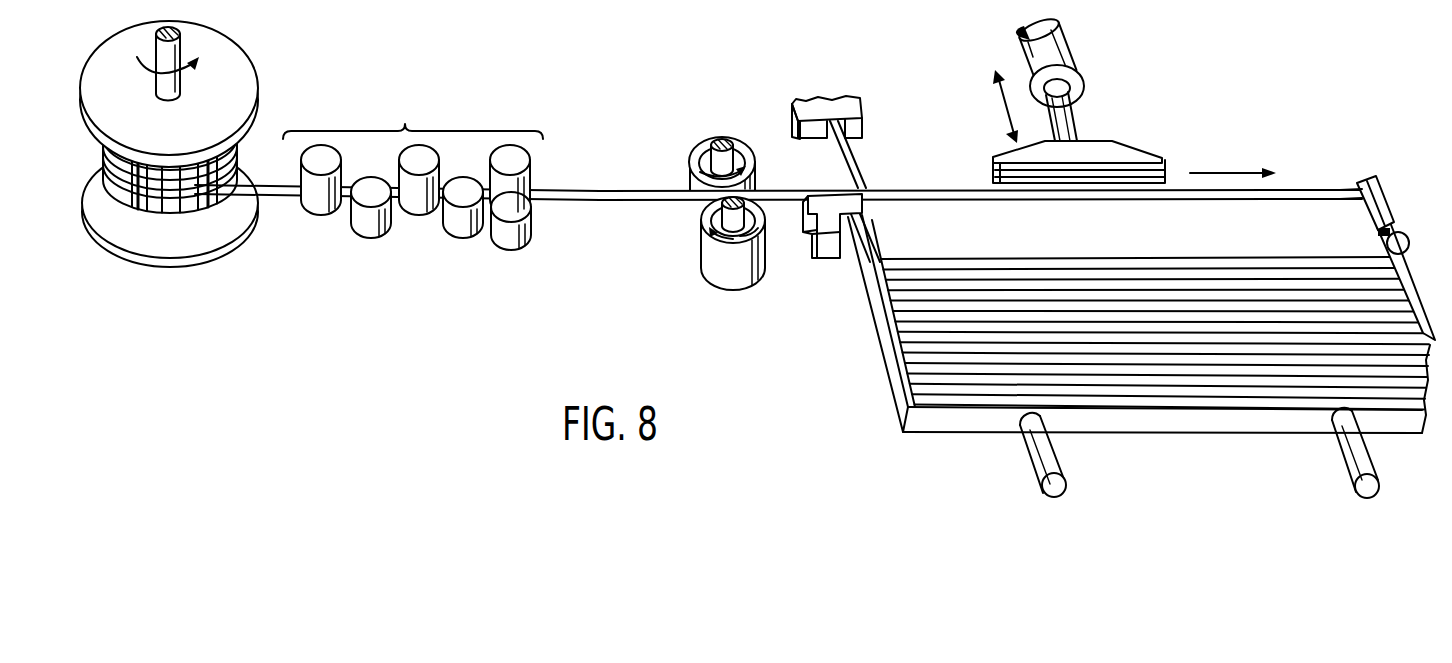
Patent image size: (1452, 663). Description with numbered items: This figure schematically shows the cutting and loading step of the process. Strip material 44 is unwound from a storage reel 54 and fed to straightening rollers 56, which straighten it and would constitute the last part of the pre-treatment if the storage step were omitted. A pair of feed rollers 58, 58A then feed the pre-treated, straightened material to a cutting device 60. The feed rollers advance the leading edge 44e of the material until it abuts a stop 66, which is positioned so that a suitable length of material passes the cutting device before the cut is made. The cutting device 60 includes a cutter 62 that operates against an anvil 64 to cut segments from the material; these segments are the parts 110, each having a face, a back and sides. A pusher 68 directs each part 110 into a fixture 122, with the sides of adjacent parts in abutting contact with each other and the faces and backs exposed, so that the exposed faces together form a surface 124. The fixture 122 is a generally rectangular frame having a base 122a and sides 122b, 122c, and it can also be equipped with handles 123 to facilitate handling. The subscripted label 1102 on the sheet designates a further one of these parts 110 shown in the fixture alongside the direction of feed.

The material 44 is at (613, 187).
The leading edge 44e is at (1371, 178).
The storage reel 54 is at (88, 85).
The straightening rollers 56 is at (405, 124).
The feed roller 58 is at (689, 150).
The feed roller 58A is at (720, 272).
The cutting device 60 is at (860, 144).
The cutter 62 is at (850, 158).
The anvil 64 is at (806, 240).
The stop 66 is at (1381, 208).
The pusher 68 is at (1122, 158).
The parts 110 is at (1012, 307).
The wire segment feed direction 1102 is at (1276, 167).
The fixture 122 is at (1117, 353).
The base 122a is at (1207, 418).
The side 122b is at (890, 357).
The side 122c is at (1380, 240).
The handles 123 is at (1030, 455).
The surface 124 is at (1272, 217).